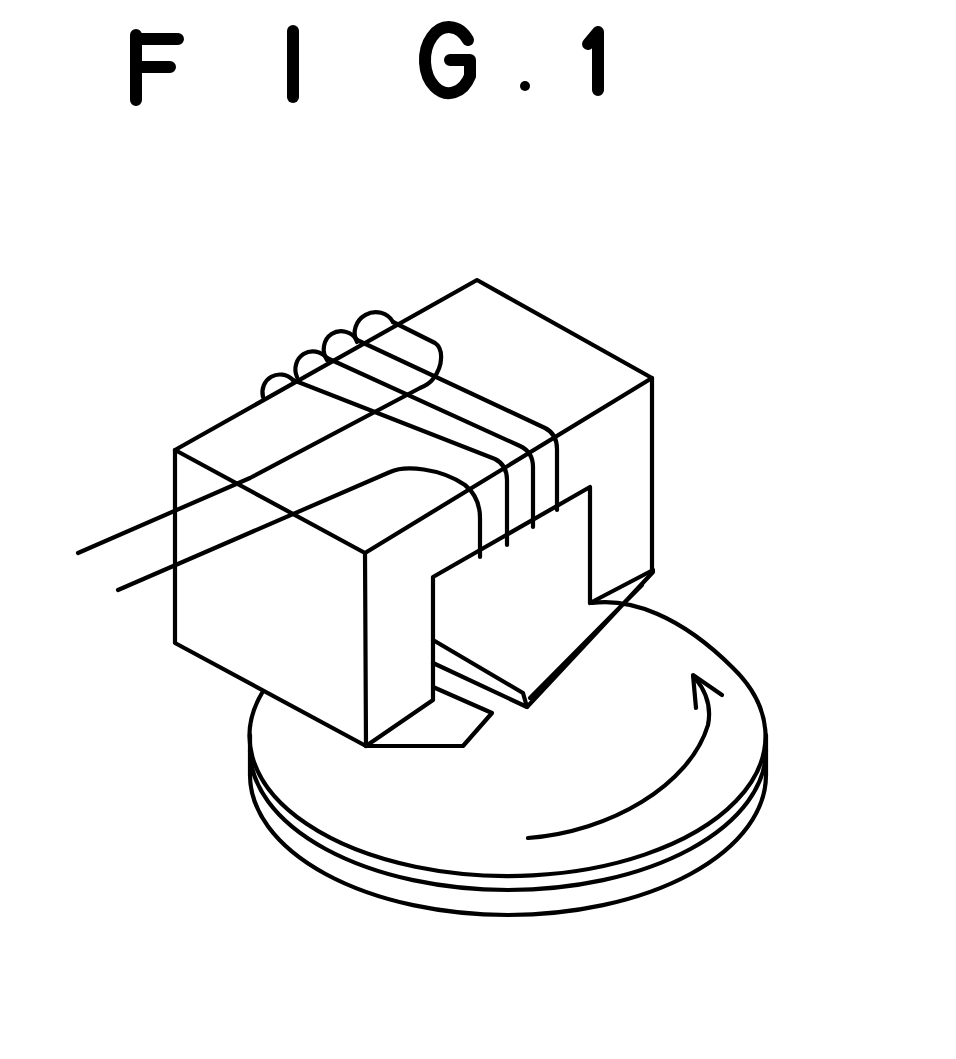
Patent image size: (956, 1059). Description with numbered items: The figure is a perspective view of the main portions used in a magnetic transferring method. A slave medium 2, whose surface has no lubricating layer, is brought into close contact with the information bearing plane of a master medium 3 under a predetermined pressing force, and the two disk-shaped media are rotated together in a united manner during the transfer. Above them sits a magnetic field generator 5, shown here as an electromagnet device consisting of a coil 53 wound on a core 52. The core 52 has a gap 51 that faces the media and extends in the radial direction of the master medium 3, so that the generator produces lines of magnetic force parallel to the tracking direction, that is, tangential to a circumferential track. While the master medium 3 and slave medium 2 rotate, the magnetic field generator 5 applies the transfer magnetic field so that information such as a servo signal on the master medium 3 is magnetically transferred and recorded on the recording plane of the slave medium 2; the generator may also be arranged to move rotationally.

The slave medium 2 is at (735, 762).
The master medium 3 is at (706, 849).
The magnetic field generator 5 is at (592, 330).
The gap 51 is at (494, 714).
The core 52 is at (642, 510).
The coil 53 is at (270, 369).